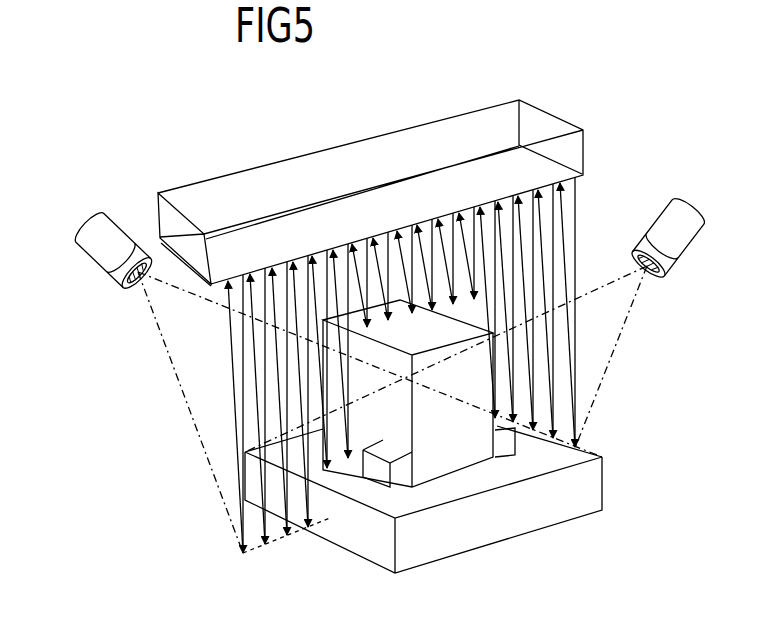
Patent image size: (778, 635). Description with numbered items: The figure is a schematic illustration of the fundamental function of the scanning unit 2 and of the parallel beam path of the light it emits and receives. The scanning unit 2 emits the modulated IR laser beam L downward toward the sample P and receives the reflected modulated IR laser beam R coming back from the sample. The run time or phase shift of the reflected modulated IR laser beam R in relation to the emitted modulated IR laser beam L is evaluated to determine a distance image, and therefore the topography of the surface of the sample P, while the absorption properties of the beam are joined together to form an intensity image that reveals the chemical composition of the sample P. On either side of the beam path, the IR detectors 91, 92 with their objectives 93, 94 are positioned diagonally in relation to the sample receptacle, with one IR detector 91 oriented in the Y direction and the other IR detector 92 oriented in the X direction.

The scanning unit 2 is at (543, 125).
The modulated IR laser beam L is at (584, 198).
The reflected modulated IR laser beam R is at (563, 255).
The sample P is at (460, 543).
The IR detector 91 is at (78, 226).
The IR detector 92 is at (701, 218).
The objective 93 is at (103, 280).
The objective 94 is at (668, 270).